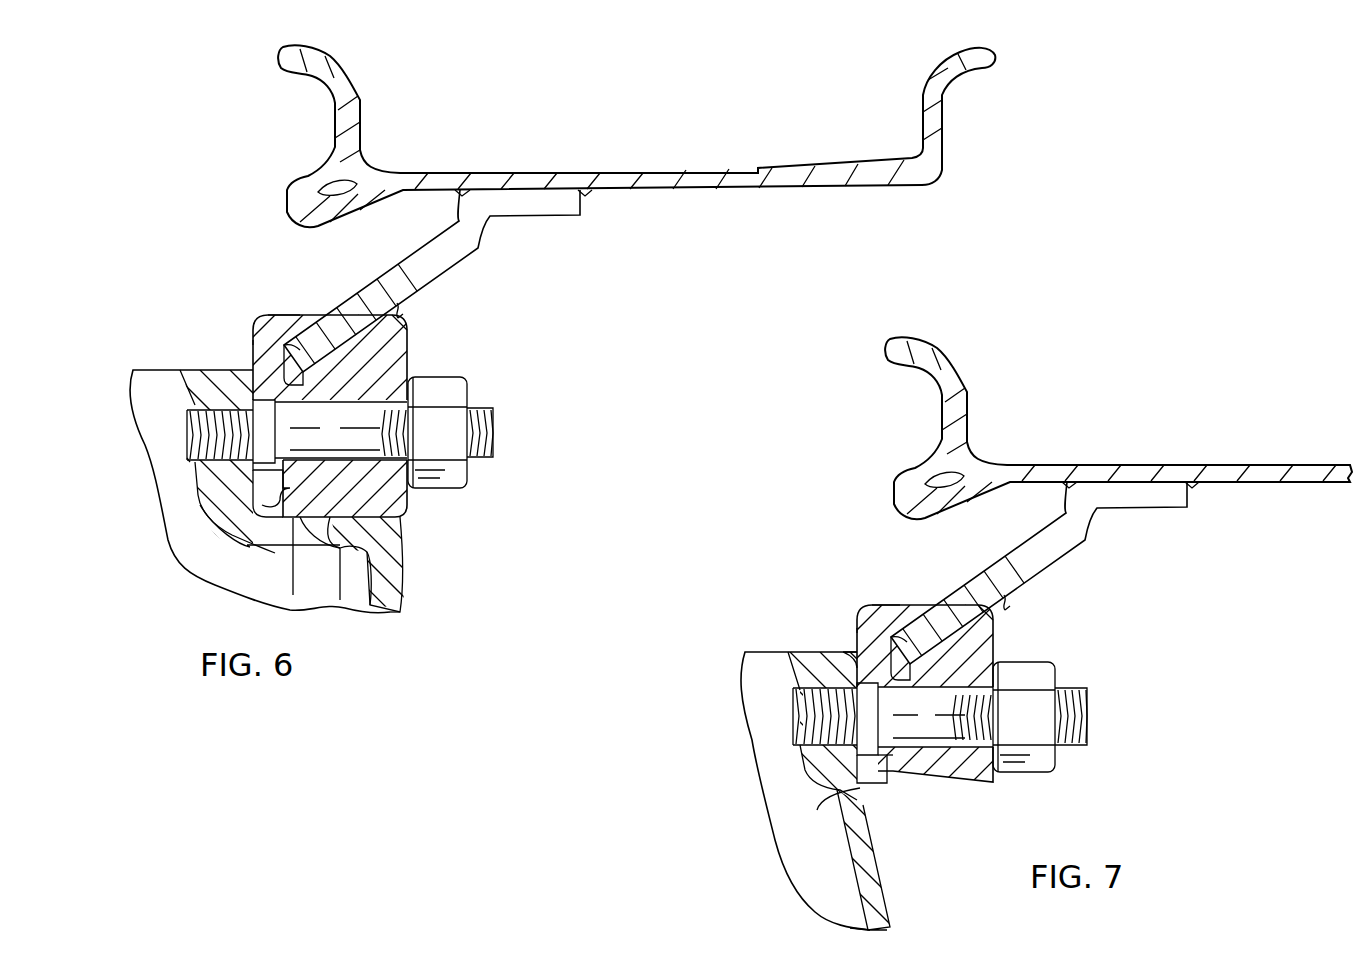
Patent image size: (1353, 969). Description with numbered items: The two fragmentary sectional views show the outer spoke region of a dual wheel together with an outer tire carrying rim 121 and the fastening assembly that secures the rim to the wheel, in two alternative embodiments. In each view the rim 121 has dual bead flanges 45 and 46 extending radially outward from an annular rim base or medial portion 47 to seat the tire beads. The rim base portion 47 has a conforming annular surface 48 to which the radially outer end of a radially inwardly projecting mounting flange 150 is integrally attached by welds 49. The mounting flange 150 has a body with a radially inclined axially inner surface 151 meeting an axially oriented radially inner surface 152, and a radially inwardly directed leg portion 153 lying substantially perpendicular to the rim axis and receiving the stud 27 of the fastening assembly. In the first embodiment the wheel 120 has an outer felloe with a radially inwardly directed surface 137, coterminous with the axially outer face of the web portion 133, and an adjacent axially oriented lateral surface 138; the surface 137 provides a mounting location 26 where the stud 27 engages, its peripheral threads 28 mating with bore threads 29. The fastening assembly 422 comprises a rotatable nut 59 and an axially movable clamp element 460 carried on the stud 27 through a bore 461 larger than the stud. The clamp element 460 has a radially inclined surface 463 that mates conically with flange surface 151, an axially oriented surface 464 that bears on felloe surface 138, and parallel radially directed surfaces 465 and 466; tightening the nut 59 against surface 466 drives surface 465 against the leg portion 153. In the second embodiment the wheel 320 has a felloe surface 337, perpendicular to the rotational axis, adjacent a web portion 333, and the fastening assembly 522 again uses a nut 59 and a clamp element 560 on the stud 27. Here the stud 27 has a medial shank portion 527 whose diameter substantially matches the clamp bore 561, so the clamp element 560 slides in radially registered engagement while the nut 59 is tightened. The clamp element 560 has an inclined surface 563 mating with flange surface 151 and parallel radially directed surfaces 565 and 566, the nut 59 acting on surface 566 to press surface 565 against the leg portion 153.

In FIG. 6, the tire carrying rim 121 is at (663, 148).
In FIG. 7, the tire carrying rim 121 is at (1195, 410).
In FIG. 6, the bead flange 46 is at (352, 98).
In FIG. 7, the bead flange 46 is at (960, 400).
In FIG. 6, the bead flange 45 is at (932, 90).
In FIG. 6, the annular rim base or medial portion 47 is at (641, 180).
In FIG. 7, the annular rim base or medial portion 47 is at (1225, 473).
In FIG. 6, the conforming annular surface 48 is at (535, 190).
In FIG. 7, the conforming annular surface 48 is at (1142, 484).
In FIG. 6, the welds 49 is at (460, 194).
In FIG. 7, the welds 49 is at (1067, 488).
In FIG. 6, the mounting or adaptor flange 150 is at (279, 307).
In FIG. 7, the mounting or adaptor flange 150 is at (889, 602).
In FIG. 6, the radially inclined axially inner surface 151 is at (405, 318).
In FIG. 7, the radially inclined axially inner surface 151 is at (990, 626).
In FIG. 6, the axially oriented radially inner surface 152 is at (253, 350).
In FIG. 7, the axially oriented radially inner surface 152 is at (908, 643).
In FIG. 6, the terminal or leg portion 153 is at (248, 545).
In FIG. 7, the terminal or leg portion 153 is at (818, 812).
In FIG. 6, the radially outer radially inclined surface 463 is at (319, 316).
In FIG. 6, the clamp element 460 is at (416, 333).
In FIG. 6, the outer rim fastening assembly 422 is at (445, 354).
In FIG. 6, the axially outer radially directed surface 466 is at (422, 371).
In FIG. 6, the bore 461 is at (361, 412).
In FIG. 6, the web portion 133 is at (148, 377).
In FIG. 6, the peripheral threads 28 is at (200, 422).
In FIG. 7, the peripheral threads 28 is at (800, 728).
In FIG. 6, the mounting location 26 is at (172, 432).
In FIG. 7, the mounting location 26 is at (1098, 720).
In FIG. 6, the stud 27 is at (186, 444).
In FIG. 7, the stud 27 is at (797, 708).
In FIG. 6, the bore threads 29 is at (190, 460).
In FIG. 7, the bore threads 29 is at (795, 735).
In FIG. 6, the rotatable nut 59 is at (462, 479).
In FIG. 7, the rotatable nut 59 is at (1040, 768).
In FIG. 6, the radially inner axially oriented lateral surface 138 is at (398, 512).
In FIG. 6, the radially inwardly directed surface 137 is at (272, 506).
In FIG. 6, the radially inner axially oriented surface 464 is at (346, 548).
In FIG. 6, the axially inner radially directed surface 465 is at (294, 596).
In FIG. 6, the dual wheel 120 is at (445, 567).
In FIG. 7, the radially outer radially inclined surface 563 is at (942, 602).
In FIG. 7, the outer rim fastening assembly 522 is at (1088, 645).
In FIG. 7, the axially outer radially directed surface 566 is at (995, 655).
In FIG. 7, the radially inwardly directed surface 337 is at (857, 650).
In FIG. 7, the clamp element bore 561 is at (936, 698).
In FIG. 7, the clamp element 560 is at (983, 788).
In FIG. 7, the medial portion 527 is at (922, 758).
In FIG. 7, the frame 333 is at (752, 658).
In FIG. 7, the axially inner radially directed surface 565 is at (880, 787).
In FIG. 7, the wheel 320 is at (925, 849).